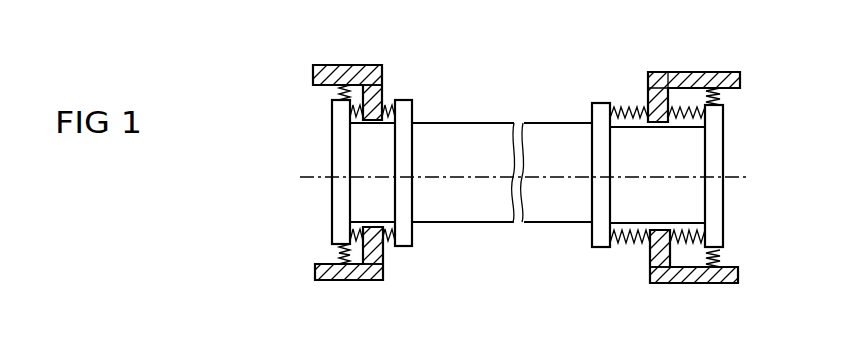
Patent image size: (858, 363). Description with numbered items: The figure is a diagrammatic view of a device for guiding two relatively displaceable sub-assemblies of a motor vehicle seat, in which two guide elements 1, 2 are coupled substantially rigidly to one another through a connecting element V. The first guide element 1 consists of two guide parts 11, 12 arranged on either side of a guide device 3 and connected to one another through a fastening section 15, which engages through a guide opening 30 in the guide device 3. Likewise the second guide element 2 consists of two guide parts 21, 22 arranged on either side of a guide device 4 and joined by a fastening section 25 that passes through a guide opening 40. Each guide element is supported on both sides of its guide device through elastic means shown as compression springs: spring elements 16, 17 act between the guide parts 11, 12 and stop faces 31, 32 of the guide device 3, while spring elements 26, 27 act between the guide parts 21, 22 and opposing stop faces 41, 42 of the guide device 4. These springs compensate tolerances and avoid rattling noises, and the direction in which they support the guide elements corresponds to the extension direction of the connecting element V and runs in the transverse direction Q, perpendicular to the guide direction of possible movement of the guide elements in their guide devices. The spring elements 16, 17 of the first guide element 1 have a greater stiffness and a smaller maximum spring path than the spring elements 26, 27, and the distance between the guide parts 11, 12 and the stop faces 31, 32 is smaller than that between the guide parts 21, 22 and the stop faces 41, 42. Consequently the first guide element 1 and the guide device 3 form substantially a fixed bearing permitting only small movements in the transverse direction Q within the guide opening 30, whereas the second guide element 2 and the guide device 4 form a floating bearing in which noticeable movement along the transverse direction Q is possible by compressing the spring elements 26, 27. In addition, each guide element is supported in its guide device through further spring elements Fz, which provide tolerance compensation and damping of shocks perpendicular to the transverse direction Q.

The first guide element 1 is at (424, 99).
The second guide element 2 is at (597, 83).
The guide device 3 is at (358, 75).
The guide device 4 is at (723, 75).
The guide part 11 is at (410, 228).
The guide part 12 is at (334, 195).
The fastening section 15 is at (362, 160).
The spring element 16 is at (415, 133).
The spring element 17 is at (357, 112).
The guide part 21 is at (602, 112).
The guide part 22 is at (715, 127).
The fastening section 25 is at (683, 177).
The spring element 26 is at (638, 115).
The spring element 27 is at (683, 124).
The guide opening 30 is at (366, 252).
The stop face 31 is at (370, 95).
The stop face 32 is at (363, 90).
The guide opening 40 is at (660, 233).
The stop face 41 is at (649, 190).
The stop face 42 is at (685, 75).
The spring elements Fz is at (340, 90).
The connecting element V is at (498, 207).
The transverse direction Q is at (568, 345).